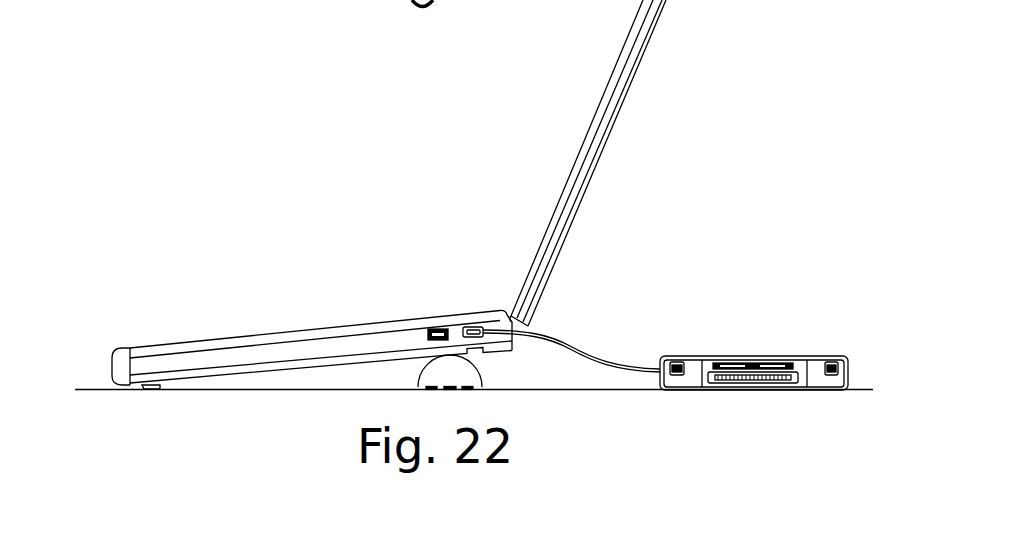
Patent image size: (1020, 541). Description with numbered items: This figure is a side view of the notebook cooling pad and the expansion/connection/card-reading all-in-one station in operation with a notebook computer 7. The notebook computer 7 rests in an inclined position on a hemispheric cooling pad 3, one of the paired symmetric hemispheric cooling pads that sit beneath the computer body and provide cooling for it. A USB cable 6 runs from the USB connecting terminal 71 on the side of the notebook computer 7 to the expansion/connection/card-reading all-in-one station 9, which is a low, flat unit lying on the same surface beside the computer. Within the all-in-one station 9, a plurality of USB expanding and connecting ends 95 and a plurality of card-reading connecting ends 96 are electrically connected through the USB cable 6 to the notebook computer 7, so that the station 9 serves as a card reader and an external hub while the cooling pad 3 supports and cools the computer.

The notebook computer 7 is at (251, 350).
The hemispheric cooling pad 3 is at (430, 375).
The USB connecting terminal 71 is at (440, 327).
The USB cable 6 is at (610, 362).
The expansion/connection/card-reading all-in-one station 9 is at (728, 357).
The card-reading connecting ends 96 is at (780, 357).
The USB expanding and connecting ends 95 is at (832, 357).